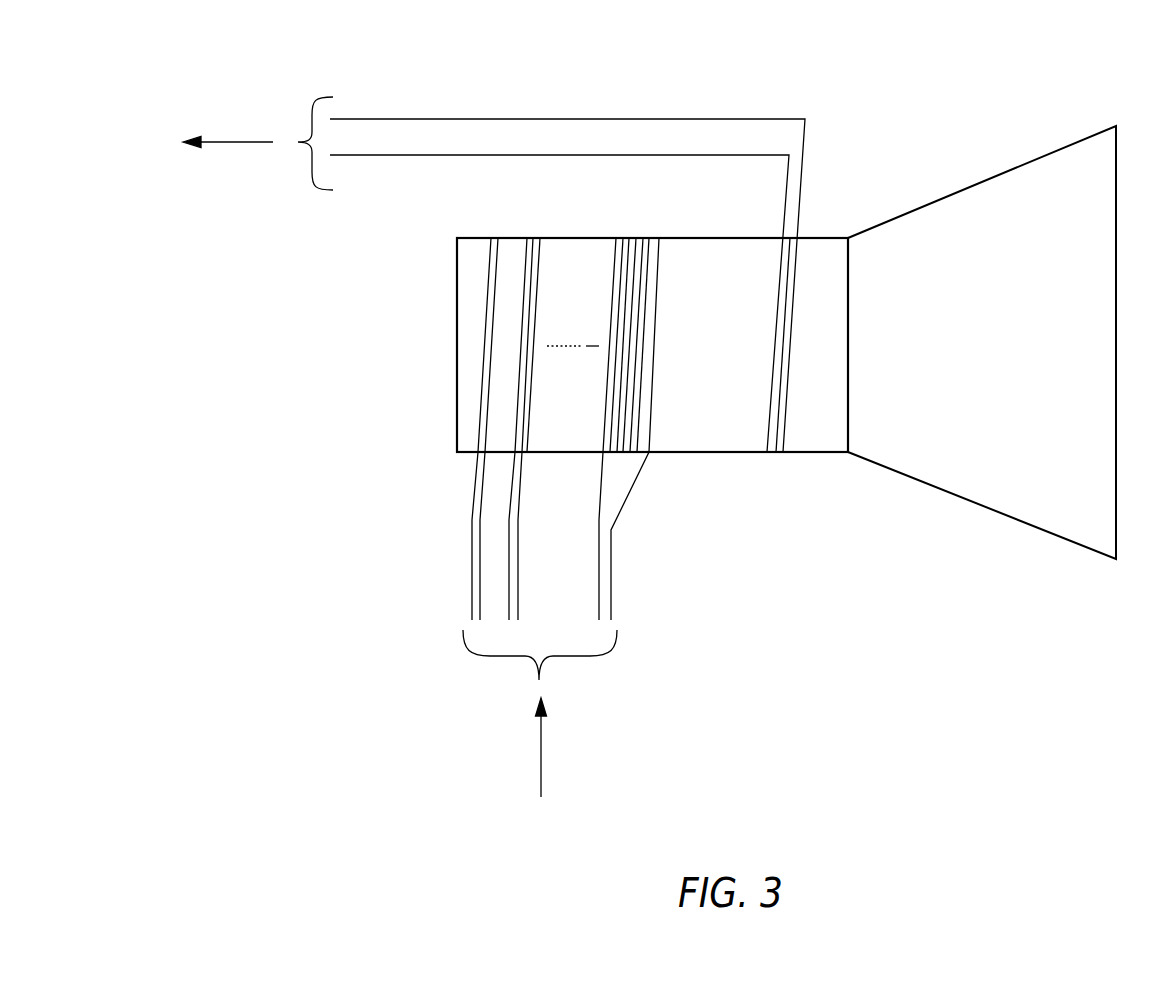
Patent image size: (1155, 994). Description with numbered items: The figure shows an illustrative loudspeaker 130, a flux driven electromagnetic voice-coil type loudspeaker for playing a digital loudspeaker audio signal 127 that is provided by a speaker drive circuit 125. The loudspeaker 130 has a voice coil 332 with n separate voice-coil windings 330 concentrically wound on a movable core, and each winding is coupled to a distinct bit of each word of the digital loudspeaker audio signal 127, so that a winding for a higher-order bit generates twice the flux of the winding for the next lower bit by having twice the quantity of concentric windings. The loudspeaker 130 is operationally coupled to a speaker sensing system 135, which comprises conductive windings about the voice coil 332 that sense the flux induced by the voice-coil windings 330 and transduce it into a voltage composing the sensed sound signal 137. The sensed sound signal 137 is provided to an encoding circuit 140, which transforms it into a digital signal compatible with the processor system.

The loudspeaker 130 is at (930, 371).
The sensed sound signal 137 is at (514, 118).
The encoding circuit 140 is at (144, 166).
The speaker sensing system 135 is at (882, 152).
The voice coil 332 is at (566, 219).
The voice-coil windings 330 is at (742, 468).
The digital loudspeaker audio signal 127 is at (886, 745).
The speaker drive circuit 125 is at (563, 858).